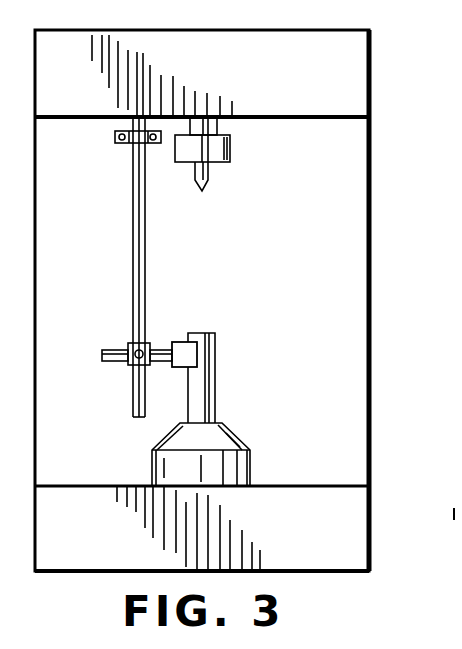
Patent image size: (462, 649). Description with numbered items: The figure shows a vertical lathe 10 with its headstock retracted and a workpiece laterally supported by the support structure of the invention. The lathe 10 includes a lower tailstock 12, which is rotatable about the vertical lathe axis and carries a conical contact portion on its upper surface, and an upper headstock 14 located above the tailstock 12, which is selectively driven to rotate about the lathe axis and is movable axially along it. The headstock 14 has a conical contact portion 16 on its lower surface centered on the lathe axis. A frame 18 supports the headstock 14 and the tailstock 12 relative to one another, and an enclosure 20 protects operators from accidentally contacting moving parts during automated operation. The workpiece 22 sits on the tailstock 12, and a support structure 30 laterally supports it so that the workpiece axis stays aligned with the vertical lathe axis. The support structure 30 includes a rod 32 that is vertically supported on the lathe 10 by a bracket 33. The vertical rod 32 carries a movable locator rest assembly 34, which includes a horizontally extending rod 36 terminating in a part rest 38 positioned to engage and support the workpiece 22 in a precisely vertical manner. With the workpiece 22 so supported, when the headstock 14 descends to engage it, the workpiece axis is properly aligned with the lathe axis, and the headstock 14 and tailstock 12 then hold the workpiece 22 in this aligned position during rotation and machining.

The vertical lathe 10 is at (392, 119).
The lower tailstock 12 is at (238, 463).
The upper headstock 14 is at (226, 148).
The conical contact portion 16 is at (209, 178).
The frame 18 is at (353, 525).
The enclosure 20 is at (372, 175).
The workpiece 22 is at (205, 395).
The support structure 30 is at (158, 246).
The rod 32 is at (136, 218).
The bracket 33 is at (125, 143).
The locator rest assembly 34 is at (110, 351).
The horizontally extending rod 36 is at (158, 350).
The part rest 38 is at (193, 350).